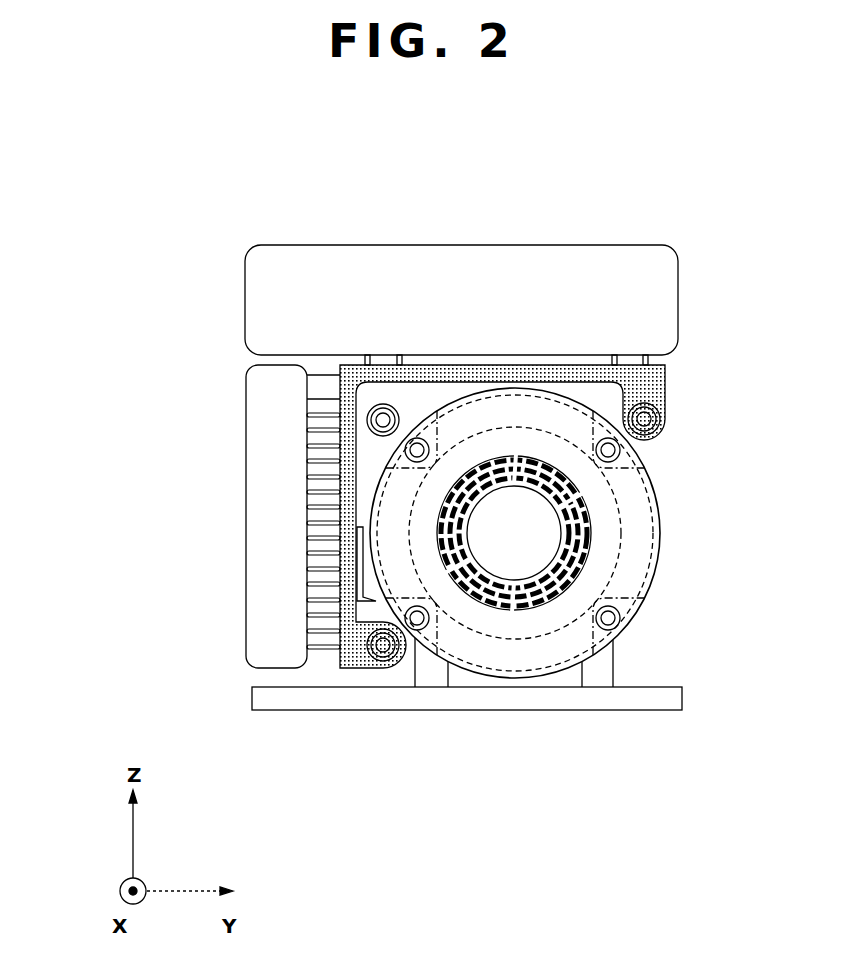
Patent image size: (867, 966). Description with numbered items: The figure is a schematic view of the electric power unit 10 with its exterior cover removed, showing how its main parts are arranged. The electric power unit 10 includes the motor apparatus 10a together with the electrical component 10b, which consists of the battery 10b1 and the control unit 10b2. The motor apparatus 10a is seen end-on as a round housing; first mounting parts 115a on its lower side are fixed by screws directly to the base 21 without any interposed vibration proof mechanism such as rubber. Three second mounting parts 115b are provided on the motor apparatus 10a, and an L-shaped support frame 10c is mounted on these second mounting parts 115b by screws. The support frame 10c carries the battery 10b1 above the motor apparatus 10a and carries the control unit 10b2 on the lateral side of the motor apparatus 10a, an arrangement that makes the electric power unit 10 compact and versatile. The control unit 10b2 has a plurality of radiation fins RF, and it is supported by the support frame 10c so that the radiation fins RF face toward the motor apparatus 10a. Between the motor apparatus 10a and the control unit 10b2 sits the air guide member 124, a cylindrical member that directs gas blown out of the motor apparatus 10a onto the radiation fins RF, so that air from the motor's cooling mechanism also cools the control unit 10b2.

The electric power unit 10 is at (188, 226).
The motor apparatus 10a is at (660, 546).
The electrical component 10b is at (126, 296).
The battery 10b1 is at (247, 310).
The control unit 10b2 is at (247, 380).
The support frame 10c is at (664, 390).
The first mounting parts 115a is at (435, 681).
The second mounting parts 115b is at (408, 446).
The air guide member 124 is at (360, 575).
The base 21 is at (278, 700).
The radiation fins RF is at (322, 508).